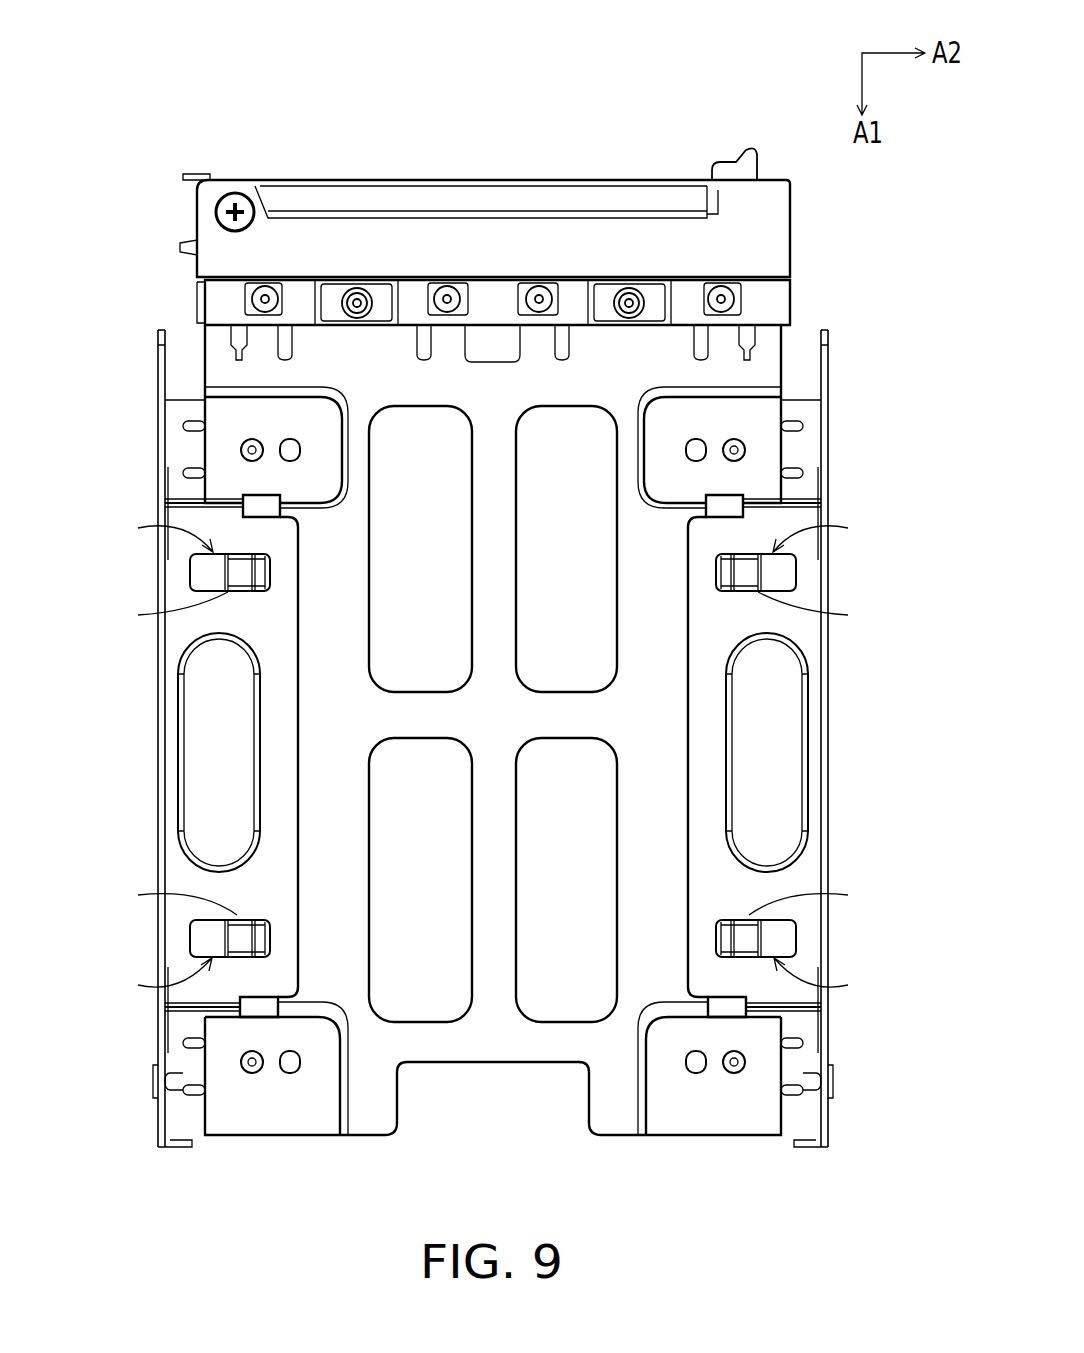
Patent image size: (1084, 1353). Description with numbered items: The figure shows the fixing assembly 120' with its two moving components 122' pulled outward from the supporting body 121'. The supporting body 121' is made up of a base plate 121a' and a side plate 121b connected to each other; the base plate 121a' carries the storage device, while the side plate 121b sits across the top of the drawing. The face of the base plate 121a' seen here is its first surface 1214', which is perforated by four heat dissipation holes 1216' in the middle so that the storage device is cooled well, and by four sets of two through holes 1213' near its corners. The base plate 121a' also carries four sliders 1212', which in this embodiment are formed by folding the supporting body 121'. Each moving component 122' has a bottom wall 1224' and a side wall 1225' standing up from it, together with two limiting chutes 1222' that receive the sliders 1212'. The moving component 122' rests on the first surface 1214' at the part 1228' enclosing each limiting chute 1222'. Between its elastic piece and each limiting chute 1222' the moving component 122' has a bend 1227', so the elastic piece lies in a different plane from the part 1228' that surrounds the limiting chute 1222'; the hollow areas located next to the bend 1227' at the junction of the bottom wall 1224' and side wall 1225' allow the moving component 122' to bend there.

The fixing assembly 120' is at (490, 614).
The supporting body 121' is at (458, 614).
The base plate 121a' is at (493, 635).
The side plate 121b is at (822, 300).
The first surface 1214' is at (493, 662).
The heat dissipation hole 1216' is at (493, 623).
The through holes 1213' is at (493, 662).
The moving component 122' is at (477, 738).
The side wall 1225' is at (494, 738).
The bend 1227' is at (494, 753).
The bottom wall 1224' is at (494, 752).
The slider 1212' is at (492, 755).
The limiting chute 1222' is at (494, 752).
The part enclosing the limiting chute 1228' is at (494, 753).